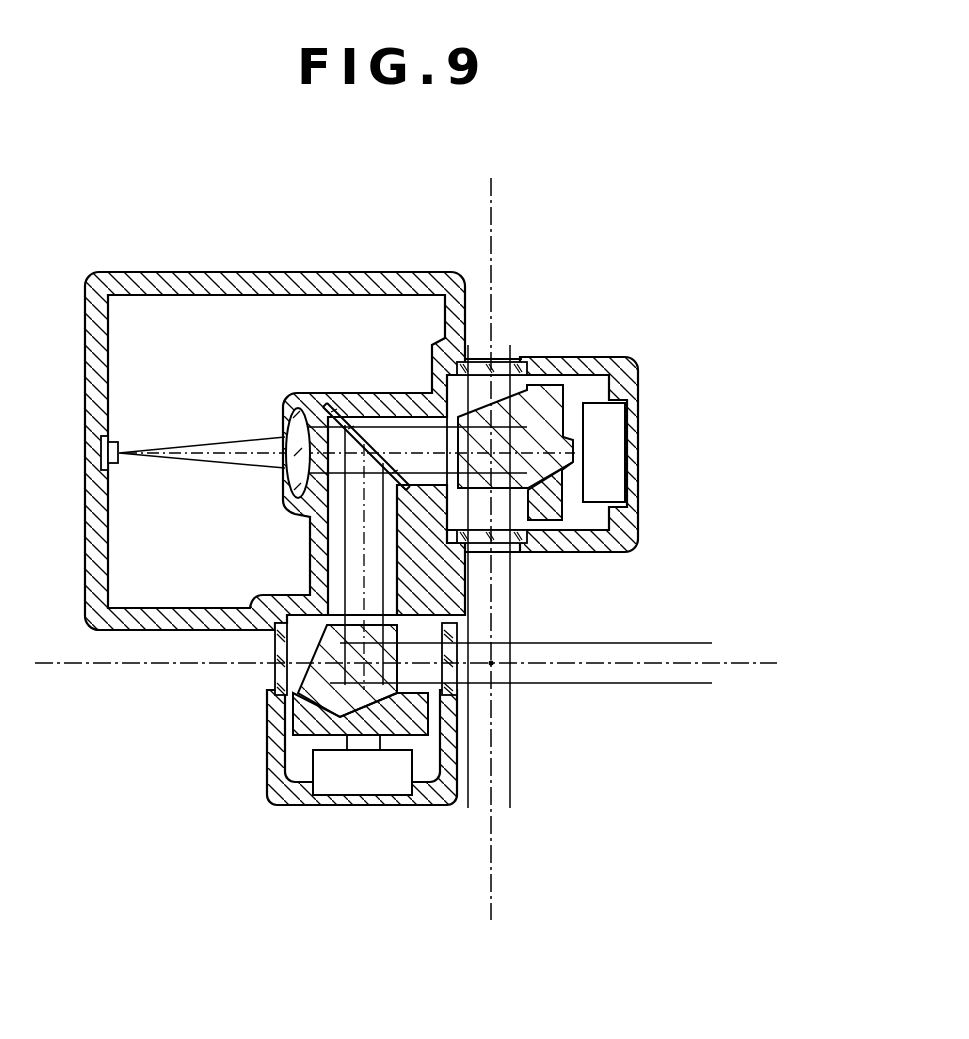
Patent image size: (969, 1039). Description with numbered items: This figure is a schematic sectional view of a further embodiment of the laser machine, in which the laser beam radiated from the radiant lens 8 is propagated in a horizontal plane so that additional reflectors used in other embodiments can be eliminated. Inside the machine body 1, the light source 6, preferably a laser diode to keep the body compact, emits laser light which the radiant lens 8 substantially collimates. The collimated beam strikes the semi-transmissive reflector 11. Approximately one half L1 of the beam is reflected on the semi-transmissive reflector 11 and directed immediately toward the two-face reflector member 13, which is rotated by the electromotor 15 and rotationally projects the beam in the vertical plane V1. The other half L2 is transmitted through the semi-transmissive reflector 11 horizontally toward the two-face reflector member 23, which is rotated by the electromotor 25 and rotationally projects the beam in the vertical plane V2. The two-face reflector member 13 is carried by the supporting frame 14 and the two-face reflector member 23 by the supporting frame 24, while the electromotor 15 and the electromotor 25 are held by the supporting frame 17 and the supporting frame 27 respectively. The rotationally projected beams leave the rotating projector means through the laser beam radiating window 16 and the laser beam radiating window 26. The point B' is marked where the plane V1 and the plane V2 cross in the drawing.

The machine body 1 is at (173, 282).
The light source 6 is at (121, 448).
The radiant lens 8 is at (283, 440).
The semi-transmissive reflector 11 is at (367, 432).
The two-face reflector member 13 is at (318, 705).
The supporting frame 14 is at (405, 725).
The electromotor 15 is at (337, 778).
The laser beam radiating window 16 is at (273, 668).
The supporting frame 17 is at (278, 797).
The two-face reflector member 23 is at (537, 410).
The supporting frame 24 is at (560, 510).
The electromotor 25 is at (610, 420).
The laser beam radiating window 26 is at (508, 359).
The supporting frame 27 is at (638, 453).
The vertical plane V1 is at (62, 665).
The vertical plane V2 is at (495, 198).
The laser beam L1 is at (644, 677).
The laser beam L2 is at (505, 760).
The intersection point B' is at (536, 699).